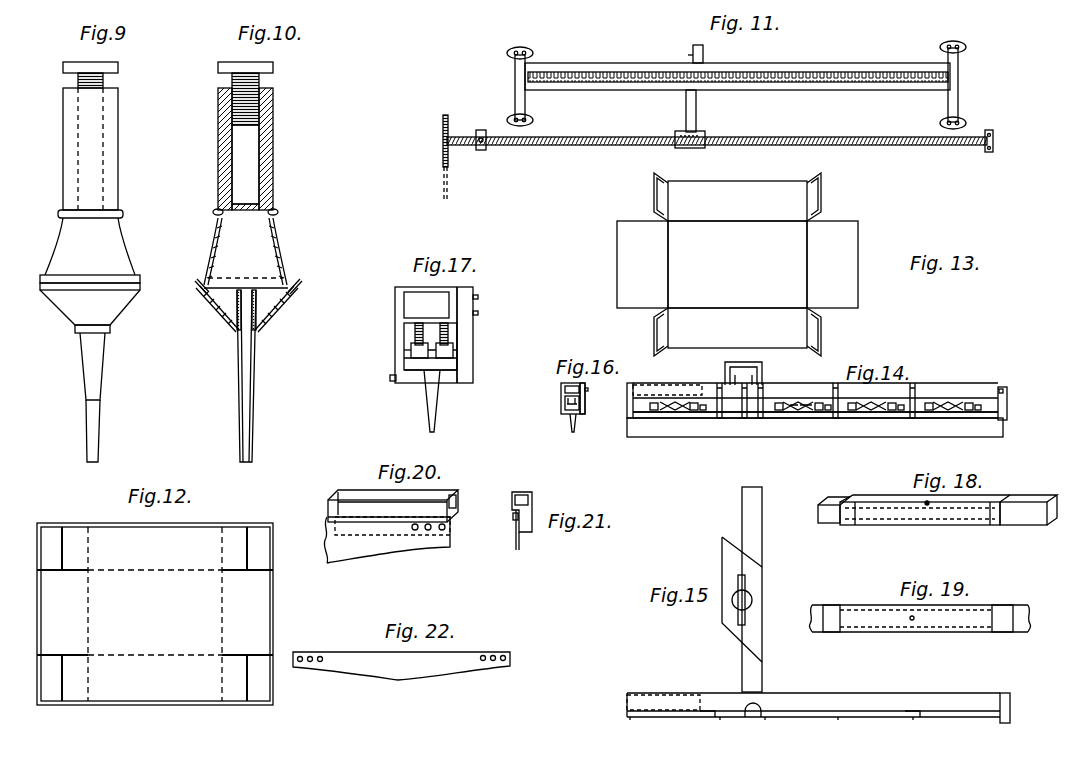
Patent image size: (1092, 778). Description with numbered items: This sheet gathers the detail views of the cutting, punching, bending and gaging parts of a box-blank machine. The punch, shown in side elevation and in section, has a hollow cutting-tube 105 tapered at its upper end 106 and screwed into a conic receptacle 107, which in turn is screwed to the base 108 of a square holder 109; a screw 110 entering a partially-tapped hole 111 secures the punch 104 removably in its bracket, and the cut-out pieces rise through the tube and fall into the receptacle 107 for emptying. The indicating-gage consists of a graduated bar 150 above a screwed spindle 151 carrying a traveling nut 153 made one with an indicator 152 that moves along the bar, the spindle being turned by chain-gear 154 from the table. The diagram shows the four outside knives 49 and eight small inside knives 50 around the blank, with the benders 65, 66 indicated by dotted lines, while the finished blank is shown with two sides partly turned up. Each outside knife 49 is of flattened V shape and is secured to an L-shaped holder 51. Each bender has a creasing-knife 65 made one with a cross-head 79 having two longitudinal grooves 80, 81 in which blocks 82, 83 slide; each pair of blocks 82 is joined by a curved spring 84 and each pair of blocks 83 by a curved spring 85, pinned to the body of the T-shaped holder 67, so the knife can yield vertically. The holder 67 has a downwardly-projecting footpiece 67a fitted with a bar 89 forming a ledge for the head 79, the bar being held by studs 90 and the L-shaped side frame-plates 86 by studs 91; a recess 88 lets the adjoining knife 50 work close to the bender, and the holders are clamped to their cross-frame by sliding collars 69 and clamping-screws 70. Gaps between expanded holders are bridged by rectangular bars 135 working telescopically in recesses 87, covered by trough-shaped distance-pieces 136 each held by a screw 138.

In FIG. 12, the outside knife 49 is at (110, 532).
In FIG. 20, the outside knife 49 is at (408, 540).
In FIG. 21, the outside knife 49 is at (521, 540).
In FIG. 22, the outside knife 49 is at (443, 662).
In FIG. 12, the inside knife 50 is at (66, 560).
In FIG. 20, the knife-holder 51 is at (347, 498).
In FIG. 21, the knife-holder 51 is at (526, 518).
In FIG. 17, the creasing-knife 65 is at (431, 408).
In FIG. 16, the creasing-knife 65 is at (571, 426).
In FIG. 14, the creasing-knife 65 is at (697, 423).
In FIG. 12, the creasing-knife 65 is at (148, 570).
In FIG. 12, the bender 66 is at (90, 615).
In FIG. 17, the holder 67 is at (402, 289).
In FIG. 16, the holder 67 is at (561, 386).
In FIG. 14, the holder 67 is at (963, 393).
In FIG. 15, the holder 67 is at (848, 706).
In FIG. 19, the holder 67 is at (833, 623).
In FIG. 10, the footpiece 67a is at (402, 368).
In FIG. 14, the sliding collar 69 is at (746, 363).
In FIG. 15, the sliding collar 69 is at (740, 567).
In FIG. 15, the clamping-screw 70 is at (755, 598).
In FIG. 17, the cross-head 79 is at (438, 365).
In FIG. 16, the cross-head 79 is at (561, 406).
In FIG. 14, the cross-head 79 is at (683, 410).
In FIG. 17, the longitudinal groove 80 is at (412, 352).
In FIG. 17, the longitudinal groove 81 is at (452, 350).
In FIG. 14, the longitudinal groove 81 is at (689, 389).
In FIG. 17, the block 82 is at (411, 347).
In FIG. 14, the block 82 is at (655, 406).
In FIG. 17, the block 83 is at (449, 346).
In FIG. 14, the block 83 is at (795, 409).
In FIG. 17, the curved spring 84 is at (415, 333).
In FIG. 14, the curved spring 84 is at (668, 398).
In FIG. 17, the curved spring 85 is at (447, 330).
In FIG. 14, the curved spring 85 is at (800, 400).
In FIG. 17, the L-shaped side frame-plate 86 is at (463, 294).
In FIG. 16, the L-shaped side frame-plate 86 is at (584, 403).
In FIG. 14, the L-shaped side frame-plate 86 is at (1007, 405).
In FIG. 15, the L-shaped side frame-plate 86 is at (705, 716).
In FIG. 17, the rectangular recess 87 is at (426, 305).
In FIG. 16, the rectangular recess 87 is at (582, 386).
In FIG. 20, the rectangular recess 87 is at (512, 502).
In FIG. 21, the rectangular recess 87 is at (521, 500).
In FIG. 15, the rectangular recess 87 is at (653, 702).
In FIG. 14, the recess 88 is at (753, 384).
In FIG. 15, the recess 88 is at (753, 718).
In FIG. 17, the bar 89 is at (417, 378).
In FIG. 10, the stud 90 is at (393, 380).
In FIG. 17, the stud 90 is at (393, 378).
In FIG. 17, the stud 91 is at (478, 313).
In FIG. 16, the stud 91 is at (585, 394).
In FIG. 14, the stud 91 is at (1001, 389).
In FIG. 15, the stud 91 is at (912, 718).
In FIG. 9, the punch 104 is at (99, 200).
In FIG. 10, the punch 104 is at (258, 204).
In FIG. 9, the hollow cutting-tube 105 is at (92, 431).
In FIG. 9, the tapered upper end 106 is at (88, 370).
In FIG. 9, the conic receptacle 107 is at (90, 307).
In FIG. 10, the conic receptacle 107 is at (268, 300).
In FIG. 9, the base 108 is at (103, 255).
In FIG. 10, the base 108 is at (217, 249).
In FIG. 9, the holder 109 is at (90, 163).
In FIG. 10, the holder 109 is at (218, 155).
In FIG. 9, the screw 110 is at (118, 67).
In FIG. 10, the screw 110 is at (218, 67).
In FIG. 10, the partially-tapped hole 111 is at (246, 178).
In FIG. 18, the rectangular bar 135 is at (1038, 507).
In FIG. 18, the distance-piece 136 is at (940, 517).
In FIG. 19, the distance-piece 136 is at (965, 620).
In FIG. 18, the screw 138 is at (927, 504).
In FIG. 19, the screw 138 is at (912, 621).
In FIG. 11, the graduated bar 150 is at (611, 70).
In FIG. 11, the screwed spindle 151 is at (858, 141).
In FIG. 11, the indicator 152 is at (704, 62).
In FIG. 11, the traveling nut 153 is at (690, 148).
In FIG. 11, the chain-gear 154 is at (440, 148).